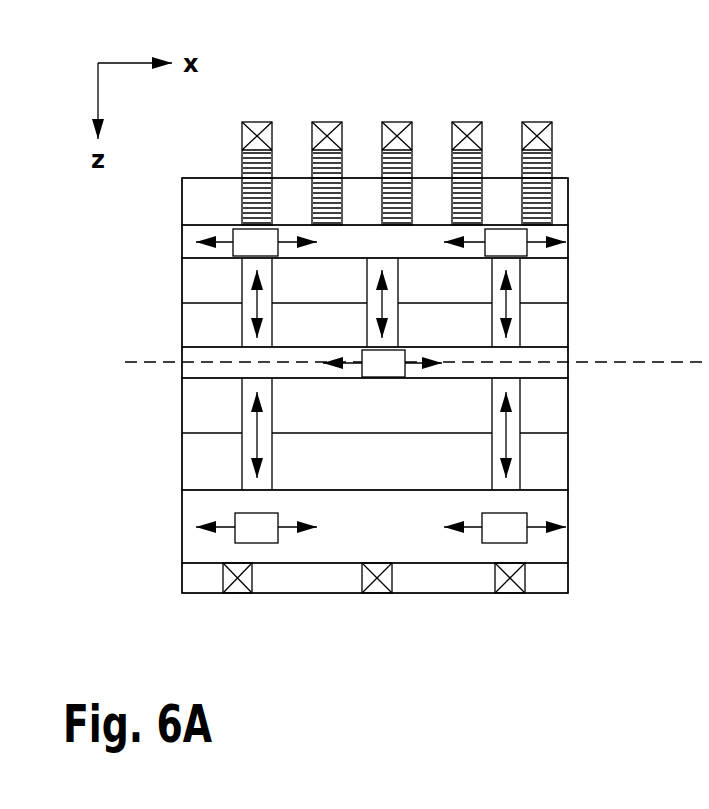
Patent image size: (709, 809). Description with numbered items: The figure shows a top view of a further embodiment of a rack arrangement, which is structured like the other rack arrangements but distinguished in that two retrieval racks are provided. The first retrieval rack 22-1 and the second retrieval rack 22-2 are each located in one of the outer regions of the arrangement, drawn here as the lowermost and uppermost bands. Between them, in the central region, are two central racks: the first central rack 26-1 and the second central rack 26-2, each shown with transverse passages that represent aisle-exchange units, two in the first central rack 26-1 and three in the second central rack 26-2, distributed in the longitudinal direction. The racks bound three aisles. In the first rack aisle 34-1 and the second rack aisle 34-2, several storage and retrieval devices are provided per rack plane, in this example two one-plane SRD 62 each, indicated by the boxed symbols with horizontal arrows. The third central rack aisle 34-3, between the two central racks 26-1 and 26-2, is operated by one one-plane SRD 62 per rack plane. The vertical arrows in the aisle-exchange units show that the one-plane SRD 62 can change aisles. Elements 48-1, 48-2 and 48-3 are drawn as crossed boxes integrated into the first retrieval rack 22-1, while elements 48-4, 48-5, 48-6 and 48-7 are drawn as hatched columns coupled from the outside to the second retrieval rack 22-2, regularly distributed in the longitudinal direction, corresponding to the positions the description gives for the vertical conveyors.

The first retrieval rack 22-1 is at (180, 575).
The second retrieval rack 22-2 is at (180, 198).
The first central rack 26-1 is at (180, 435).
The second central rack 26-2 is at (180, 300).
The first rack aisle 34-1 is at (182, 505).
The second rack aisle 34-2 is at (182, 240).
The third central rack aisle 34-3 is at (182, 350).
The fluid port 48-1 is at (239, 595).
The fluid port 48-2 is at (378, 595).
The fluid port 48-3 is at (512, 595).
The fluid port 48-4 is at (255, 119).
The fluid port 48-5 is at (326, 119).
The fluid port 48-6 is at (396, 119).
The fluid port 48-7 is at (536, 119).
The one-plane SRD 62 is at (381, 386).